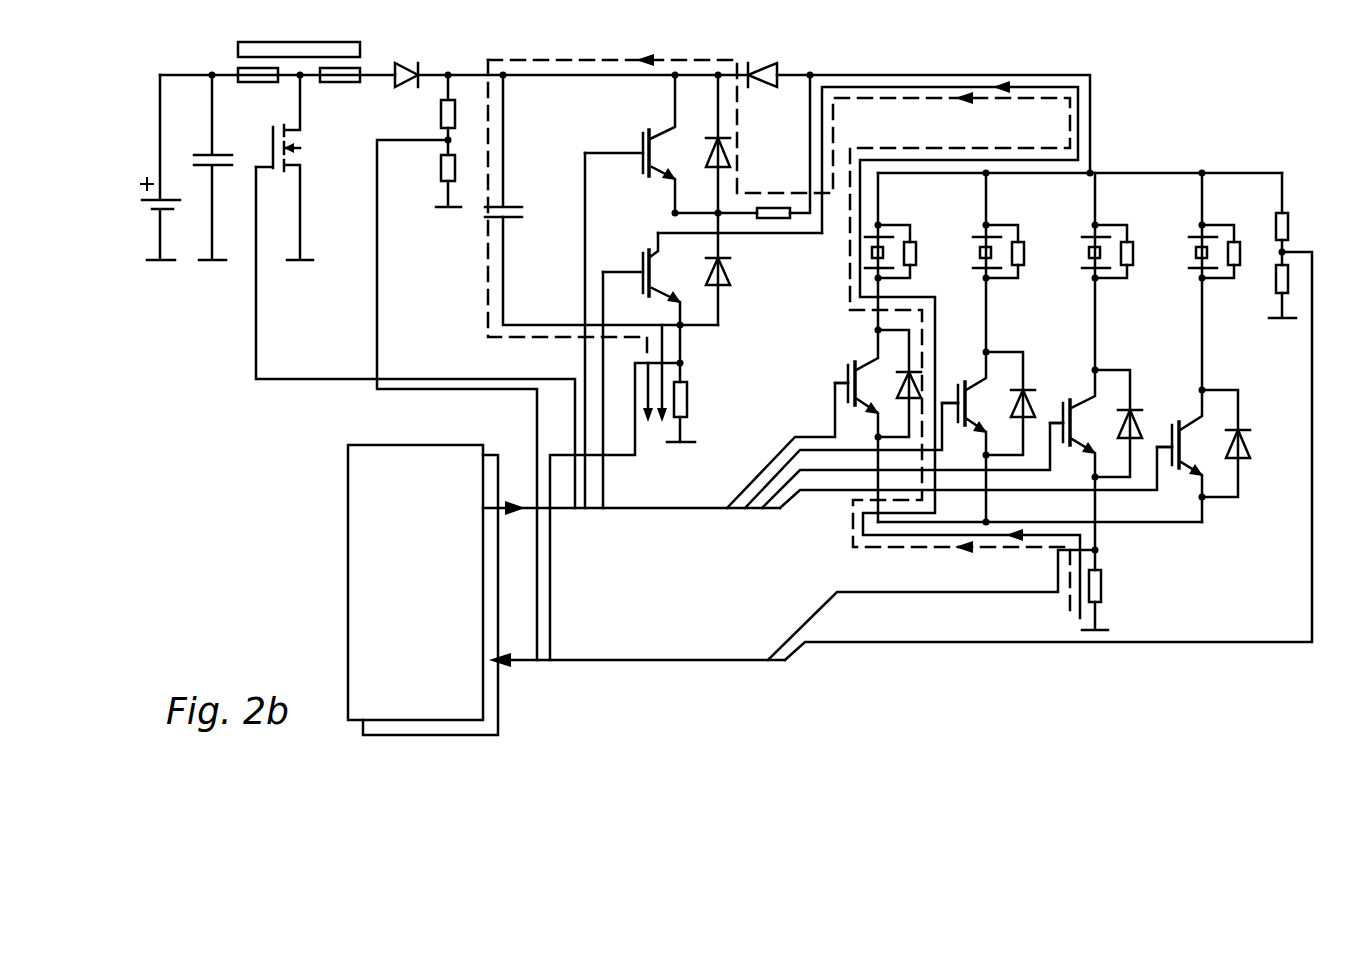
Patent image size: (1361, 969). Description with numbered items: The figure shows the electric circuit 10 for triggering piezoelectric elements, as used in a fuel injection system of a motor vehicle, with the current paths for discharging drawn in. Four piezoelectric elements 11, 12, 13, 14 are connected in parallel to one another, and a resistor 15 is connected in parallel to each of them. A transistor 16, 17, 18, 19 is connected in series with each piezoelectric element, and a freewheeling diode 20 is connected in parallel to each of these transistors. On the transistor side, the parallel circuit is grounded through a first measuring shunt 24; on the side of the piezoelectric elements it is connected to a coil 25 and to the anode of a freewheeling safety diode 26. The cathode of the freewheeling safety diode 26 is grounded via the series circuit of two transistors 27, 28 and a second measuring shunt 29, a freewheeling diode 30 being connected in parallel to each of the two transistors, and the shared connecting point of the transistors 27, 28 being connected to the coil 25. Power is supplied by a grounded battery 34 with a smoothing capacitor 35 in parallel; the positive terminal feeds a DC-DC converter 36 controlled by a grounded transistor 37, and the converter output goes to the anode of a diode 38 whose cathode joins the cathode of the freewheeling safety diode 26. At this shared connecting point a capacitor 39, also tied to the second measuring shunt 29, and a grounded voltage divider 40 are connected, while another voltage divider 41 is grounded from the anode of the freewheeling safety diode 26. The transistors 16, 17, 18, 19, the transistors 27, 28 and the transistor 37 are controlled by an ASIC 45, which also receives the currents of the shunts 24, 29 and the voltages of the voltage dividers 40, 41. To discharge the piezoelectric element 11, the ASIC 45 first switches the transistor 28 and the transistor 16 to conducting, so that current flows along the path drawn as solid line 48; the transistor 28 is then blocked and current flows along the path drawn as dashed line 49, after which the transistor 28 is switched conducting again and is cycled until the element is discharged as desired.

The electric circuit 10 is at (250, 497).
The piezoelectric element 11 is at (872, 253).
The piezoelectric element 12 is at (980, 252).
The piezoelectric element 13 is at (1088, 252).
The piezoelectric element 14 is at (1196, 252).
The resistor 15 is at (1242, 258).
The transistor 16 is at (845, 372).
The transistor 17 is at (956, 398).
The transistor 18 is at (1054, 410).
The transistor 19 is at (1165, 430).
The freewheeling diode 20 is at (1245, 440).
The first measuring shunt 24 is at (1110, 586).
The coil 25 is at (787, 222).
The freewheeling safety diode 26 is at (778, 86).
The transistor 27 is at (641, 148).
The transistor 28 is at (641, 268).
The second measuring shunt 29 is at (690, 400).
The freewheeling diode 30 is at (729, 283).
The battery 34 is at (142, 210).
The smoothing capacitor 35 is at (208, 152).
The DC-DC converter 36 is at (312, 90).
The transistor 37 is at (303, 143).
The diode 38 is at (416, 62).
The capacitor 39 is at (518, 205).
The voltage divider 40 is at (472, 134).
The voltage divider 41 is at (1304, 232).
The ASIC 45 is at (435, 588).
The solid line 48 is at (741, 237).
The dashed line 49 is at (488, 275).